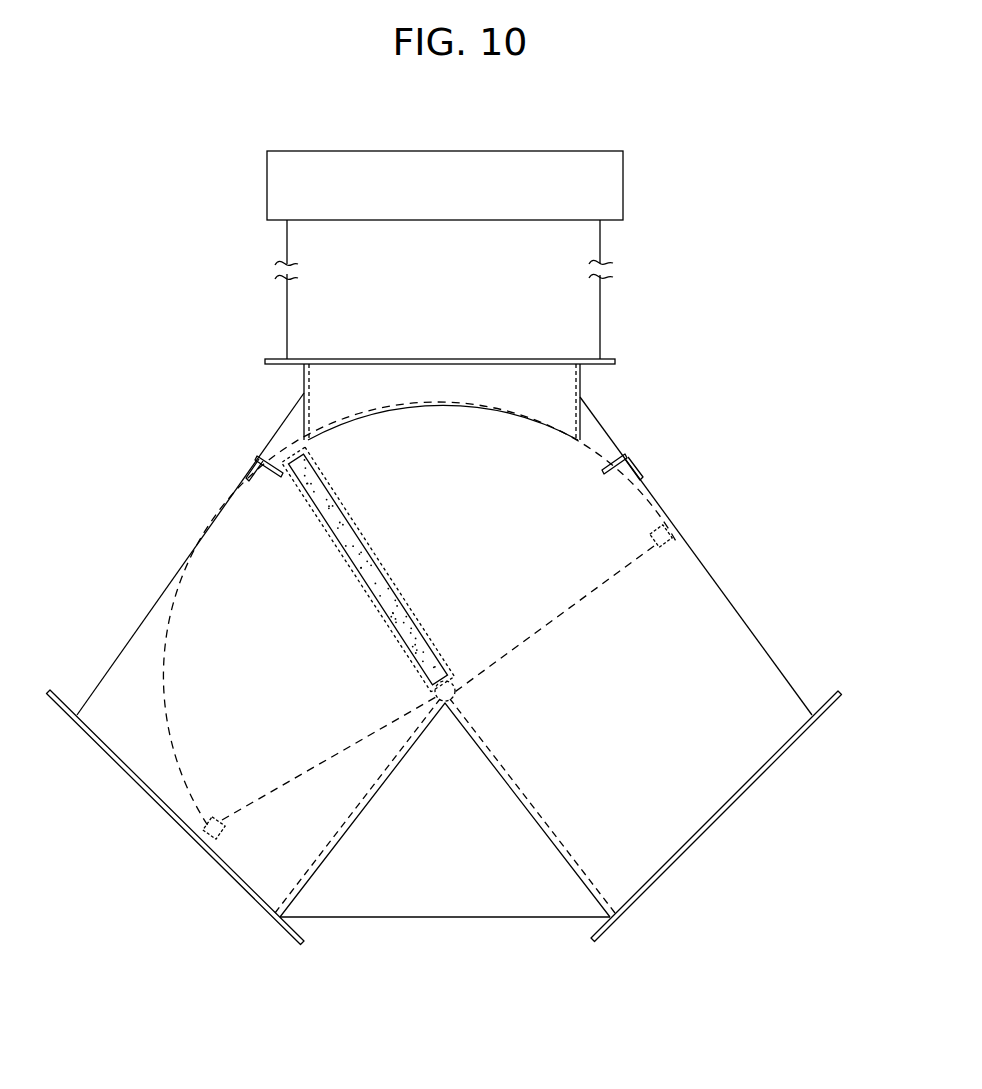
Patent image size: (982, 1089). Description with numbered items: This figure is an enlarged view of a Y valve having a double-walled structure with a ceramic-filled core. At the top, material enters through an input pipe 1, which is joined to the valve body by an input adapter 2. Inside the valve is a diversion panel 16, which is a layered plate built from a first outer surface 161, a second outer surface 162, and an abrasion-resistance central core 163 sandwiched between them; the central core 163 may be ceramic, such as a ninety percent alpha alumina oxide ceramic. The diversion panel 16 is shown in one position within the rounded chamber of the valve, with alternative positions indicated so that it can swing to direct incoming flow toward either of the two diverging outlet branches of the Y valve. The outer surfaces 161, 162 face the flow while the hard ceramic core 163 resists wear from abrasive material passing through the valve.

The input pipe 1 is at (623, 185).
The input adapter 2 is at (600, 327).
The diversion panel 16 is at (447, 592).
The first outer surface 161 is at (342, 503).
The second outer surface 162 is at (387, 620).
The abrasion-resistance central core 163 is at (422, 660).